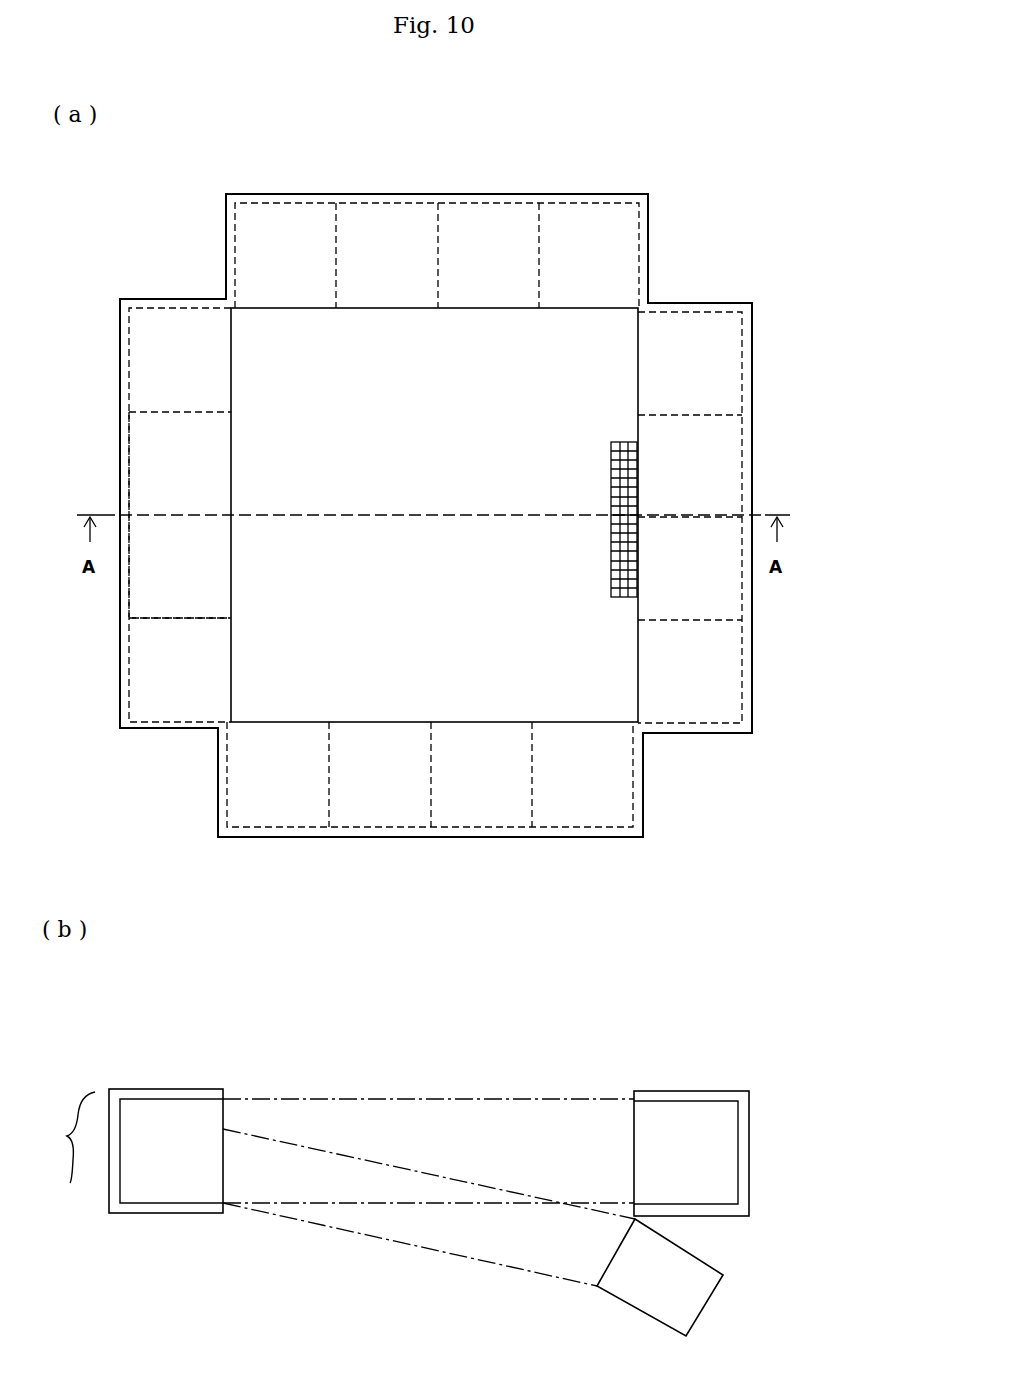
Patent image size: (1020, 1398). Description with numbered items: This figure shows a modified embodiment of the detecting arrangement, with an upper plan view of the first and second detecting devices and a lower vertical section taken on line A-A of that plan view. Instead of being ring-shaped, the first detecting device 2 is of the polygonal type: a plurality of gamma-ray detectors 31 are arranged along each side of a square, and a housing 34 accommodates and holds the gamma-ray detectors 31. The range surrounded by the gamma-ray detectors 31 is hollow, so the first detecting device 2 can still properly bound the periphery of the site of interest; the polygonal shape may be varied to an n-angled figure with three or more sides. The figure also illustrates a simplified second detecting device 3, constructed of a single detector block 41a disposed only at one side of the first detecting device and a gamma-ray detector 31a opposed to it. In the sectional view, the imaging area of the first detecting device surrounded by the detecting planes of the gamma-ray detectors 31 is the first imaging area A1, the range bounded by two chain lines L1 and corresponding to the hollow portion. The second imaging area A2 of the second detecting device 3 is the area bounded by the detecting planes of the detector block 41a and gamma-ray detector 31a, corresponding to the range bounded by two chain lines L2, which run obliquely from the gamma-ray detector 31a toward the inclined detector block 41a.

The first detecting device 2 is at (478, 680).
The second detecting device 3 is at (60, 1137).
The gamma-ray detector 31 is at (439, 709).
The gamma-ray detector 31a is at (170, 812).
The housing 34 is at (752, 323).
The detector block 41a is at (660, 1277).
The chain line L1 is at (572, 1098).
The chain line L2 is at (266, 1137).
The first imaging area A1 is at (584, 1141).
The second imaging area A2 is at (531, 1245).